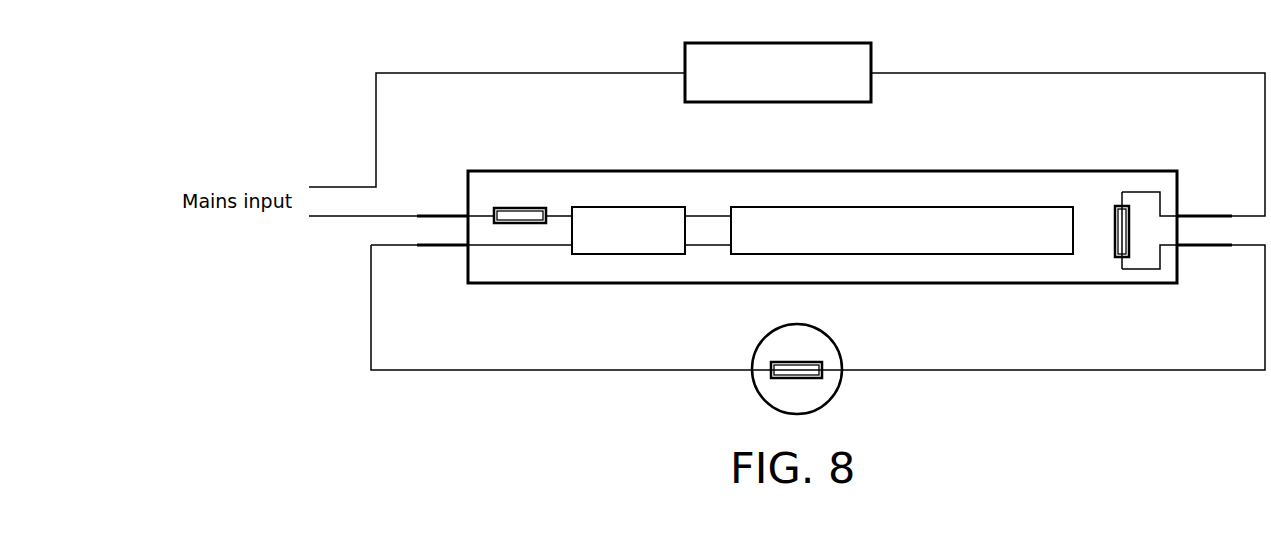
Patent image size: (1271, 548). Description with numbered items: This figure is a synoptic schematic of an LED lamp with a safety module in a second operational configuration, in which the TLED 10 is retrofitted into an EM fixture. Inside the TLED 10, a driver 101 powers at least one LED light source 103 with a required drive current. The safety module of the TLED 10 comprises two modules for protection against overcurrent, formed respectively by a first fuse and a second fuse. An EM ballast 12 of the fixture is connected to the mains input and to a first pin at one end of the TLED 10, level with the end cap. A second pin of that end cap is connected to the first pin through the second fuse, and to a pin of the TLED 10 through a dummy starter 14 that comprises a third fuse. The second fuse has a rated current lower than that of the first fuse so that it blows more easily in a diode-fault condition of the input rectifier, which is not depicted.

The TLED 10 is at (1127, 171).
The EM ballast 12 is at (868, 58).
The dummy starter 14 is at (822, 346).
The driver 101 is at (630, 215).
The LED light source 103 is at (998, 217).